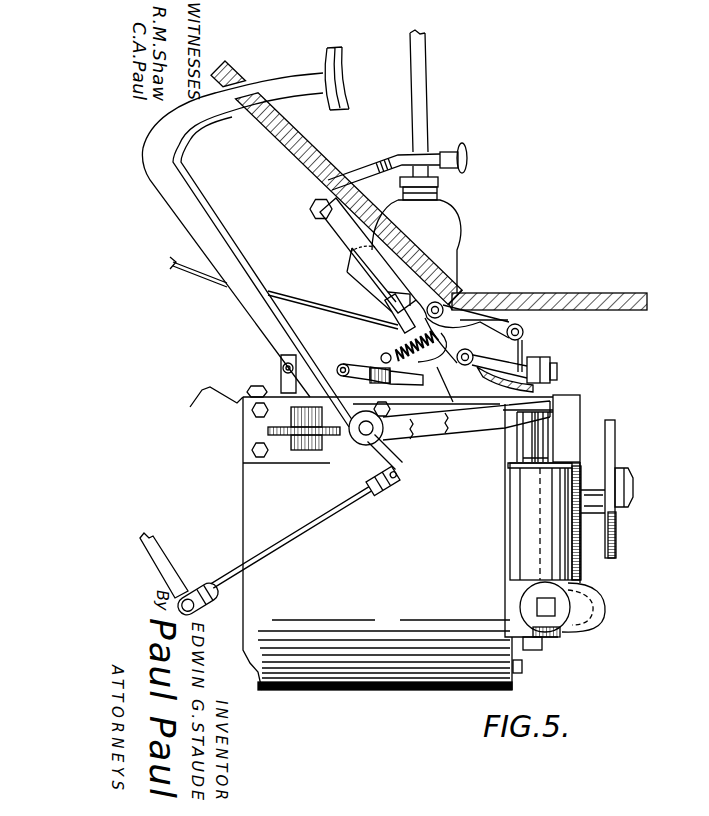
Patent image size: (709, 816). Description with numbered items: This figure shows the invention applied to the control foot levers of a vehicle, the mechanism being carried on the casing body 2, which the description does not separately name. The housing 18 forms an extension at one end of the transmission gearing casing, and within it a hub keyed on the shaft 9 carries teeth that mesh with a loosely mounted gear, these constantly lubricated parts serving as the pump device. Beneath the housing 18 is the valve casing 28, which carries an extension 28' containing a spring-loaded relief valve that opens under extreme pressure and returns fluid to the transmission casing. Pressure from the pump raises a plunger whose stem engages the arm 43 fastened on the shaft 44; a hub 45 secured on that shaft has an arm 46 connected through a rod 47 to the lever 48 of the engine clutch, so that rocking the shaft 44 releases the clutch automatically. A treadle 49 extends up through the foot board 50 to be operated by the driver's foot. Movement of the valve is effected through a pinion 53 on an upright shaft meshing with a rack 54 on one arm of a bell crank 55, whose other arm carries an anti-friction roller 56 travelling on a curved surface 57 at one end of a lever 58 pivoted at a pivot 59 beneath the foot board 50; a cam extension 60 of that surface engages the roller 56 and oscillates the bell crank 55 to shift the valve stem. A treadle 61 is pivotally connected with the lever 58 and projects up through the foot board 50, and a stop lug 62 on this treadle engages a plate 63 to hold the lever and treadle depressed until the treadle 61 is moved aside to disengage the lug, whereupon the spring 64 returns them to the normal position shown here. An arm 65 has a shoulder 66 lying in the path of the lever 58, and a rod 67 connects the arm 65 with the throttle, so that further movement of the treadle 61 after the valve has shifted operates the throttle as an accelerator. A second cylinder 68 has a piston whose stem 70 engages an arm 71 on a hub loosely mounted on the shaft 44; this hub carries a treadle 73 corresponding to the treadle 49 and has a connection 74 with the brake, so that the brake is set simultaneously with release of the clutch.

The motor housing 2 is at (368, 683).
The shaft 9 is at (634, 488).
The housing 18 is at (565, 445).
The valve casing 28 is at (596, 596).
The extension 28' is at (619, 607).
The arm 43 is at (428, 427).
The shaft 44 is at (393, 441).
The hub 45 is at (347, 447).
The arm 46 is at (377, 455).
The rod 47 is at (357, 495).
The lever 48 is at (165, 557).
The treadle 49 is at (176, 221).
The foot board 50 is at (315, 147).
The pinion 53 is at (560, 382).
The rack 54 is at (533, 373).
The bell crank 55 is at (525, 327).
The anti-friction roller 56 is at (521, 356).
The curved surface 57 is at (428, 362).
The lever 58 is at (400, 218).
The pivot 59 is at (466, 296).
The cam extension 60 is at (487, 352).
The treadle 61 is at (468, 152).
The stop lug 62 is at (405, 158).
The plate 63 is at (313, 201).
The spring 64 is at (447, 315).
The arm 65 is at (380, 310).
The shoulder 66 is at (456, 290).
The rod 67 is at (178, 275).
The cylinder 68 is at (555, 483).
The stem 70 is at (553, 432).
The arm 71 is at (413, 435).
The treadle 73 is at (200, 203).
The connection 74 is at (365, 318).